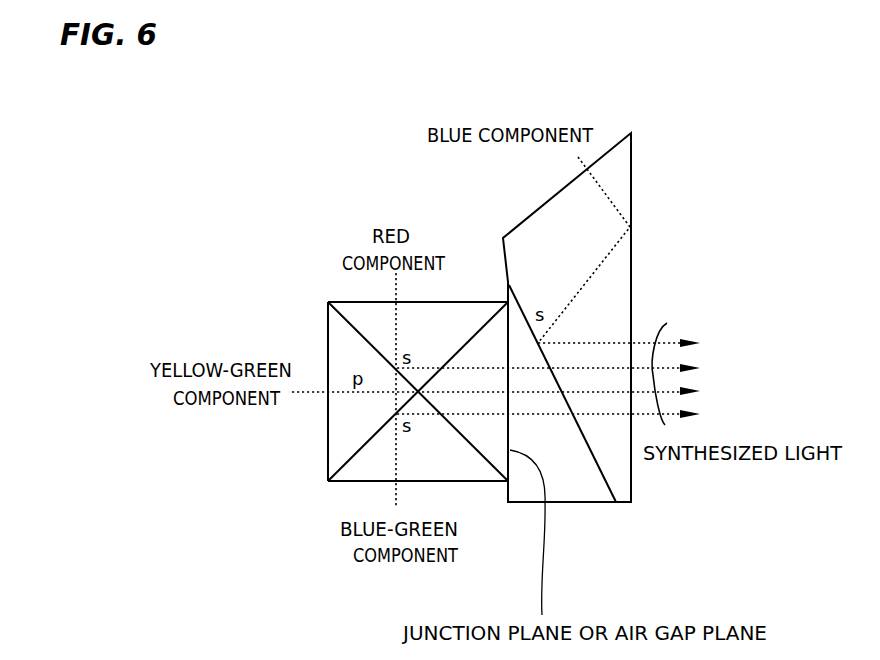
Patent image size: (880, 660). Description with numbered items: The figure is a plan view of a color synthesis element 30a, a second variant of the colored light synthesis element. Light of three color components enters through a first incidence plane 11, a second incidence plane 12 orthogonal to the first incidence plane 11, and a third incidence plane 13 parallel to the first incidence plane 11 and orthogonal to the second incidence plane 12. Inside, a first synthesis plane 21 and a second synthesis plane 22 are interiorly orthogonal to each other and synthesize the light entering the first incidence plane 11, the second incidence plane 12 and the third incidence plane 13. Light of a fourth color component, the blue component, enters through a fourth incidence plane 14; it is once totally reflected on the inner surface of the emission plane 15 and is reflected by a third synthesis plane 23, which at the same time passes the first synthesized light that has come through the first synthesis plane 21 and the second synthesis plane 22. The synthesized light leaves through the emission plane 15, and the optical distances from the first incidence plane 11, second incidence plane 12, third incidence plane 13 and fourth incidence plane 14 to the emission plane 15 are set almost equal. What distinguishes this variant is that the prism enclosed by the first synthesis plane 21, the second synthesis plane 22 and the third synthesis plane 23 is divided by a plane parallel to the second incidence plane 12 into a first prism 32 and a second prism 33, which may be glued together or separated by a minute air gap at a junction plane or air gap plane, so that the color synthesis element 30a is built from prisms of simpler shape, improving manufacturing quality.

The first incidence plane 11 is at (335, 481).
The second incidence plane 12 is at (328, 465).
The third incidence plane 13 is at (340, 302).
The fourth incidence plane 14 is at (628, 133).
The emission plane 15 is at (631, 172).
The first synthesis plane 21 is at (363, 443).
The second synthesis plane 22 is at (490, 467).
The third synthesis plane 23 is at (605, 470).
The color synthesis element 30a is at (713, 123).
The first prism 32 is at (490, 340).
The second prism 33 is at (582, 480).